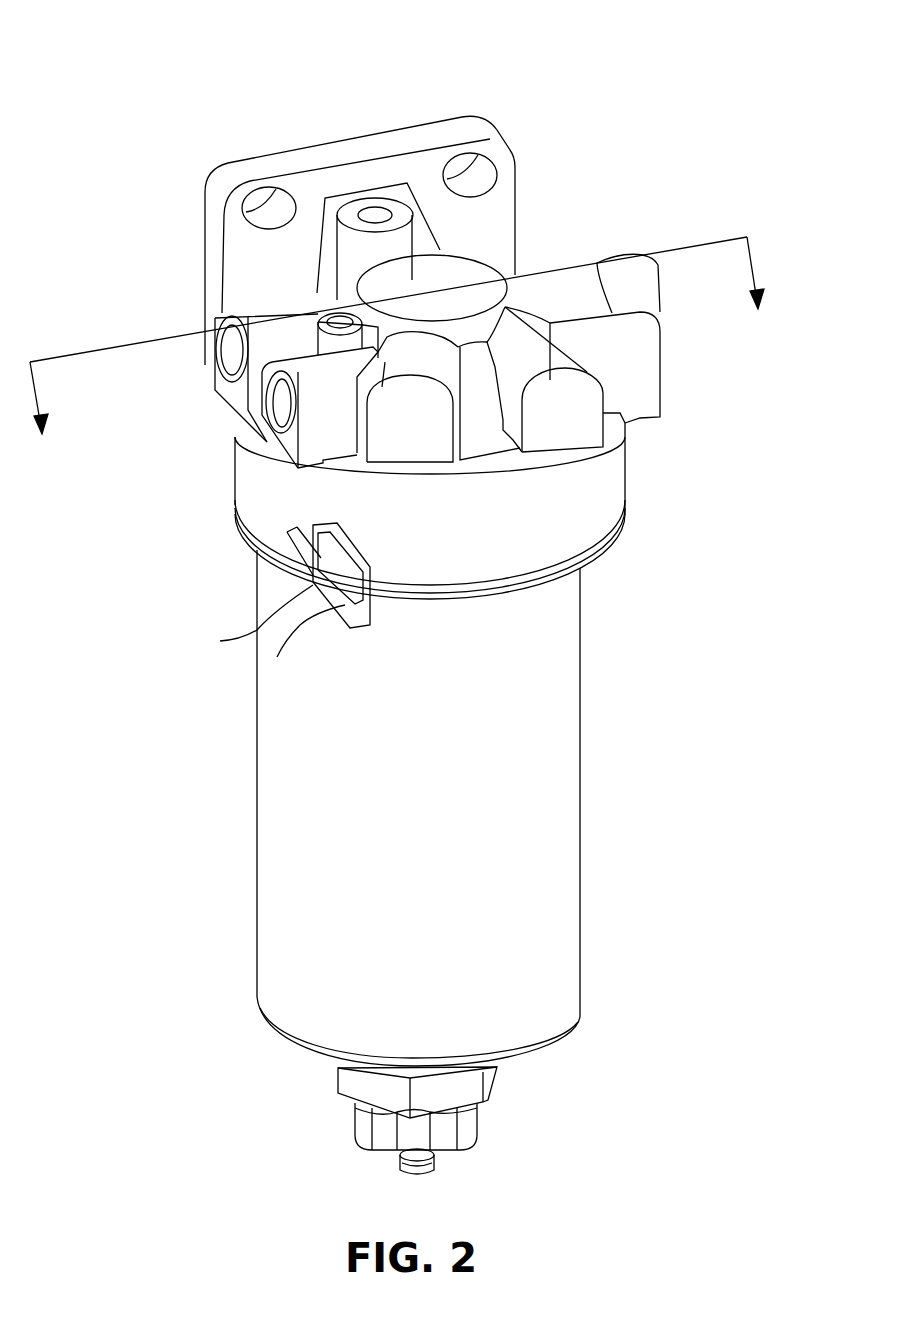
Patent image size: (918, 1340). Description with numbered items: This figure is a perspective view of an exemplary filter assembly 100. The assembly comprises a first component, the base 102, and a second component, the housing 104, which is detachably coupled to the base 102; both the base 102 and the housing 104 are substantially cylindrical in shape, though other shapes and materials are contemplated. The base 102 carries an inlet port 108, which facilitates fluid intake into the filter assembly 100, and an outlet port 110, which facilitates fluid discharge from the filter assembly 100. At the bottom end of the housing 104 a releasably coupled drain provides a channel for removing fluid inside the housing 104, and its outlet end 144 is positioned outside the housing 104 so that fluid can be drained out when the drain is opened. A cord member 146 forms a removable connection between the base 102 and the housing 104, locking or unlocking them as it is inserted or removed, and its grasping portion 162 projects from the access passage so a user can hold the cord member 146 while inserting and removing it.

The filter assembly 100 is at (172, 83).
The base 102 is at (408, 278).
The housing 104 is at (590, 822).
The inlet port 108 is at (283, 405).
The outlet port 110 is at (235, 352).
The outlet end 144 is at (405, 1175).
The cord member 146 is at (306, 595).
The grasping portion 162 is at (307, 612).